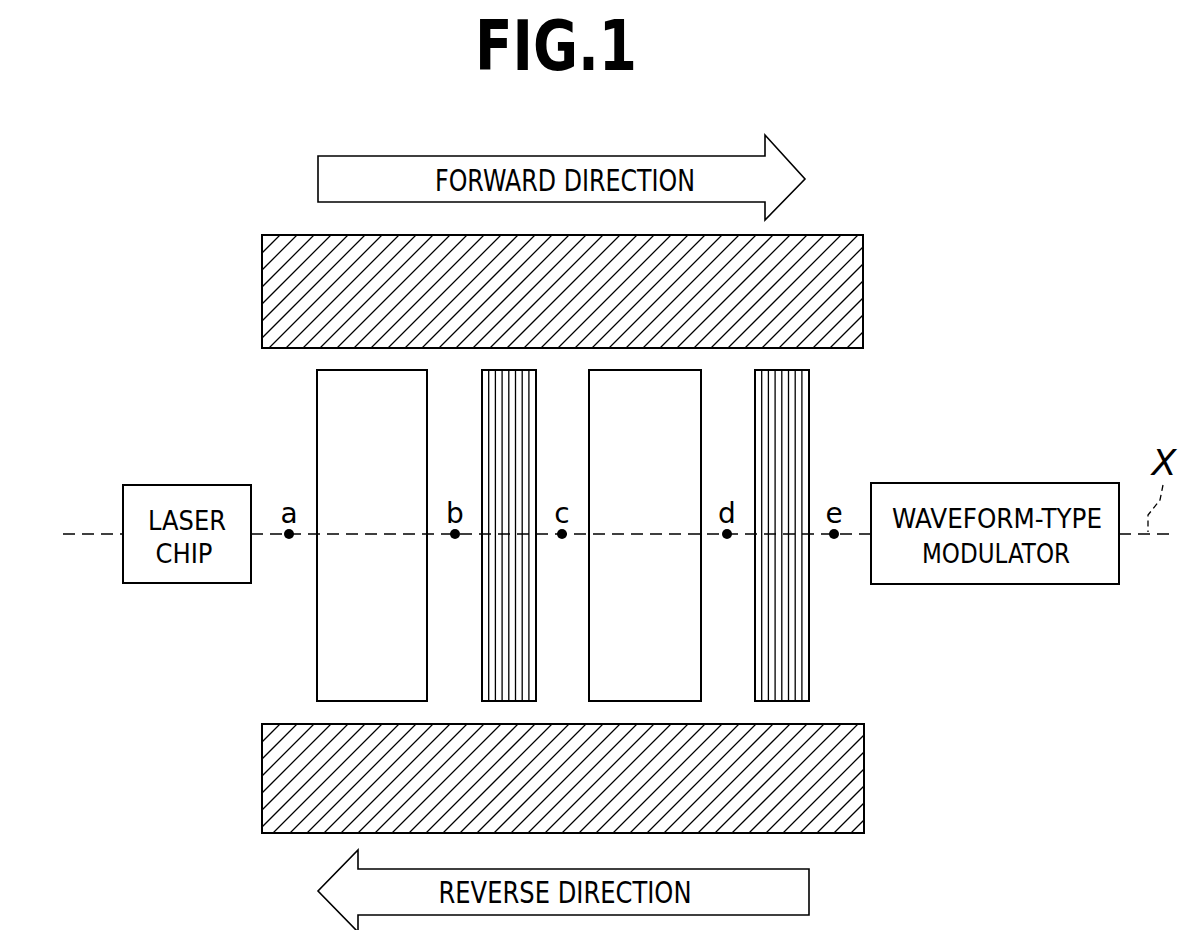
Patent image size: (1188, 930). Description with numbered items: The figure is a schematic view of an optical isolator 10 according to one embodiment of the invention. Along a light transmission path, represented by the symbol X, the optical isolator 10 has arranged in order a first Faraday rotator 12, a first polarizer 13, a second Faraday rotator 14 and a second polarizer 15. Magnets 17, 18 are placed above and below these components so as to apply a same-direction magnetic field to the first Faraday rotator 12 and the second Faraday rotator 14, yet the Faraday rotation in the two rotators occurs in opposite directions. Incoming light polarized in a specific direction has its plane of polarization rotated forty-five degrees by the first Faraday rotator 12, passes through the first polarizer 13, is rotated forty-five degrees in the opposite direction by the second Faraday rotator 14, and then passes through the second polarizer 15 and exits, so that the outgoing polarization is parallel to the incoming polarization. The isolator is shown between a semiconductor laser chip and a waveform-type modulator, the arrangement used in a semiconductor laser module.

The optical isolator 10 is at (922, 231).
The first Faraday rotator 12 is at (342, 634).
The first polarizer 13 is at (505, 455).
The second Faraday rotator 14 is at (642, 450).
The second polarizer 15 is at (783, 652).
The magnet 17 is at (292, 289).
The magnet 18 is at (293, 778).